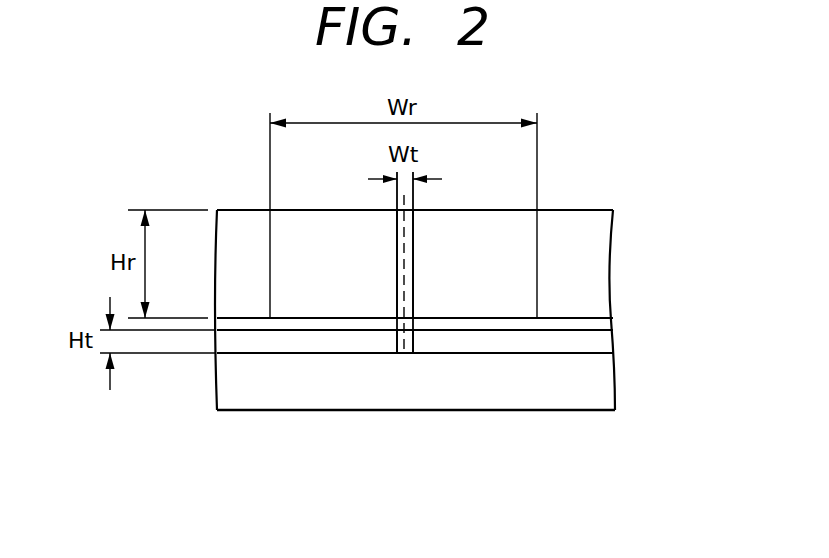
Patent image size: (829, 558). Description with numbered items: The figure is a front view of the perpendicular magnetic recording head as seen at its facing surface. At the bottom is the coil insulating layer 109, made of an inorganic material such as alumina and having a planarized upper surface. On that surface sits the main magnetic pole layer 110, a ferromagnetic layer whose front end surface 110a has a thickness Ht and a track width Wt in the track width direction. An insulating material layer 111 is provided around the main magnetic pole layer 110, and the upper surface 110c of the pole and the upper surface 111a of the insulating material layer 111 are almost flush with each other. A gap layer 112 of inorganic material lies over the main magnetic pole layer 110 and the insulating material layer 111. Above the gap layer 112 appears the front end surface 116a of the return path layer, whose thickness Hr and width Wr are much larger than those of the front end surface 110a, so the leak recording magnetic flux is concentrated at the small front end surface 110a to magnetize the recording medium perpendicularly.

The coil insulating layer 109 is at (488, 400).
The main magnetic pole layer 110 is at (403, 353).
The front end surface of the main magnetic pole layer 110a is at (395, 343).
The upper surface of the main magnetic pole layer 110c is at (398, 320).
The insulating material layer 111 is at (608, 343).
The upper surface of the insulating material layer 111a is at (550, 328).
The gap layer 112 is at (608, 325).
The front end surface of the return path layer 116a is at (523, 238).